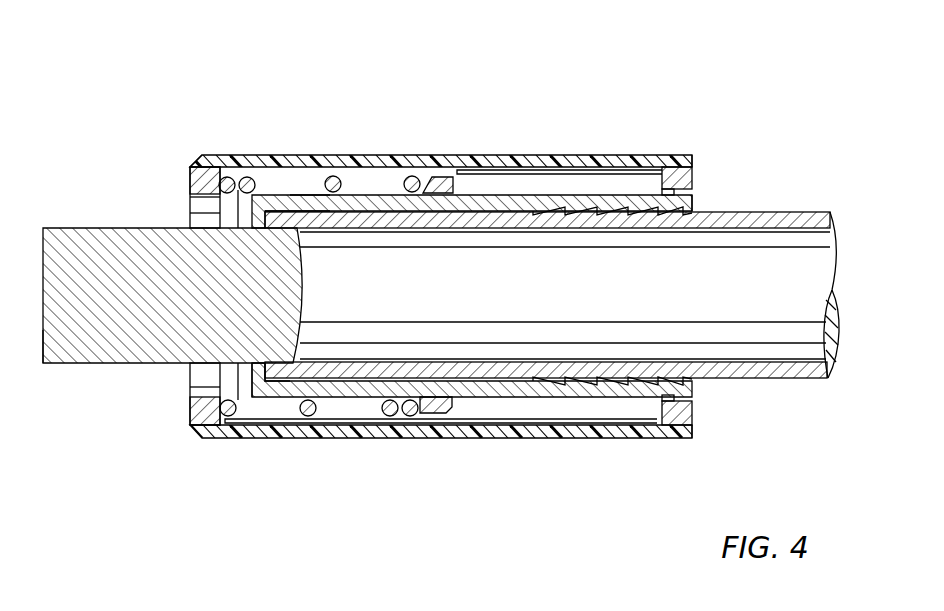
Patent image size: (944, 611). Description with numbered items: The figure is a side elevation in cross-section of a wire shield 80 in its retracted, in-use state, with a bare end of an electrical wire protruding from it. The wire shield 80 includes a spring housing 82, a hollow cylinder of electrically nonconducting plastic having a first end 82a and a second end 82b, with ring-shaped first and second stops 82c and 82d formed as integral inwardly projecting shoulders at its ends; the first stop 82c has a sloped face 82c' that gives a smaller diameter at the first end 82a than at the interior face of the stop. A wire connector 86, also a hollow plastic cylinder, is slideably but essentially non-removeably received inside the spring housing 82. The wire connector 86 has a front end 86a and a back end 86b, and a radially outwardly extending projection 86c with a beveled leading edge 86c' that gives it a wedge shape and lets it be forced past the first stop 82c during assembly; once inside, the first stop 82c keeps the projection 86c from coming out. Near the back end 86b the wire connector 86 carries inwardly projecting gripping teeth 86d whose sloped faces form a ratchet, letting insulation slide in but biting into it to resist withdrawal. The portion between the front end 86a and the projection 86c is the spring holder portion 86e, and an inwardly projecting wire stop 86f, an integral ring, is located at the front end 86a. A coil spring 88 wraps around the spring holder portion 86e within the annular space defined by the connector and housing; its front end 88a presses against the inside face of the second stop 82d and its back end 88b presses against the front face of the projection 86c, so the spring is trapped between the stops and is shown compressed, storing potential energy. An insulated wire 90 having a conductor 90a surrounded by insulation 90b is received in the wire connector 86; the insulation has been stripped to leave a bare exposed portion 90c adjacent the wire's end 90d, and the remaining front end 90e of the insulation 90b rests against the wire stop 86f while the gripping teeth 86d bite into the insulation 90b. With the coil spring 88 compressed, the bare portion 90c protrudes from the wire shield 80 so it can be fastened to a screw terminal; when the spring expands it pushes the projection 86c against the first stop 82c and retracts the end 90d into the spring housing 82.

The wire shield 80 is at (622, 82).
The spring housing 82 is at (553, 156).
The first end 82a is at (680, 165).
The second end 82b is at (200, 156).
The first stop 82c is at (730, 149).
The sloped face 82c' is at (727, 433).
The second stop 82d is at (190, 180).
The wire connector 86 is at (537, 398).
The front end 86a is at (258, 398).
The back end 86b is at (694, 200).
The projection 86c is at (443, 257).
The beveled leading edge 86c' is at (430, 448).
The gripping teeth 86d is at (594, 210).
The spring holder portion 86e is at (308, 193).
The wire stop 86f is at (262, 372).
The coil spring 88 is at (338, 178).
The front end of coil spring 88a is at (226, 178).
The back end of coil spring 88b is at (417, 178).
The insulated wire 90 is at (778, 379).
The conductor 90a is at (812, 352).
The insulation 90b is at (830, 212).
The bare exposed portion 90c is at (76, 228).
The end of insulated wire 90d is at (43, 352).
The front end of insulation 90e is at (280, 208).